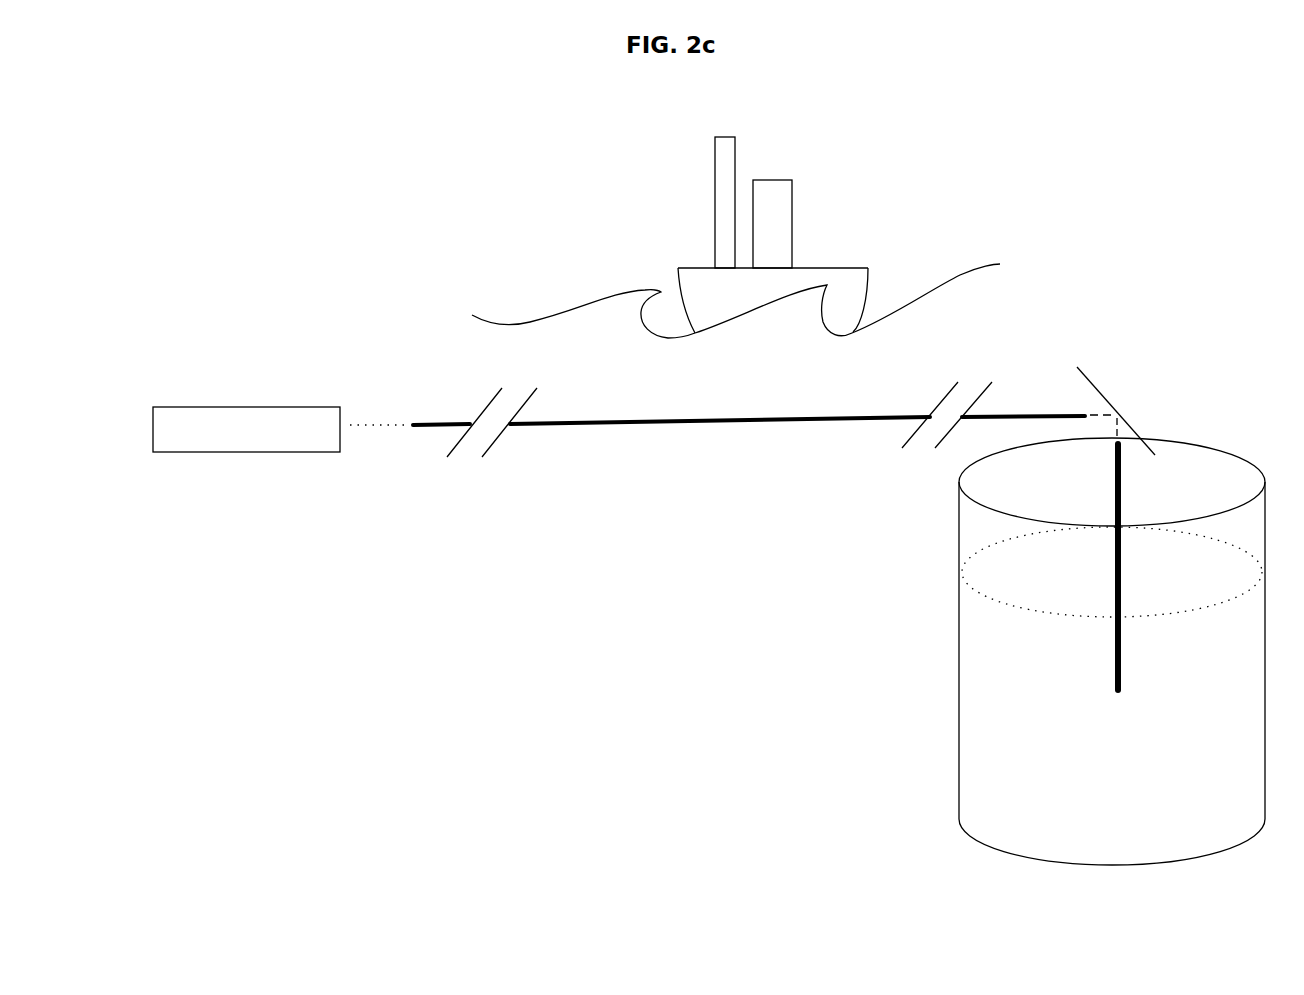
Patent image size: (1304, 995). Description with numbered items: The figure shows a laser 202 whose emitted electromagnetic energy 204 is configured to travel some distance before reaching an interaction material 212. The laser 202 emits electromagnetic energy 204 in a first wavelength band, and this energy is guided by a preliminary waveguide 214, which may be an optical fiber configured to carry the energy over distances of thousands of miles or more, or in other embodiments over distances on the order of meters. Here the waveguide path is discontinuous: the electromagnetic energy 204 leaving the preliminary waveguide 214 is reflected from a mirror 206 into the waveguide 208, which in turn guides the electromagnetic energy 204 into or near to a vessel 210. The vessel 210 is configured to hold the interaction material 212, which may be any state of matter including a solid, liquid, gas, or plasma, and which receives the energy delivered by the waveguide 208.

The laser 202 is at (253, 452).
The electromagnetic energy 204 is at (385, 431).
The preliminary waveguide 214 is at (423, 432).
The mirror 206 is at (1100, 397).
The waveguide 208 is at (1122, 513).
The vessel 210 is at (958, 660).
The interaction material 212 is at (1112, 609).